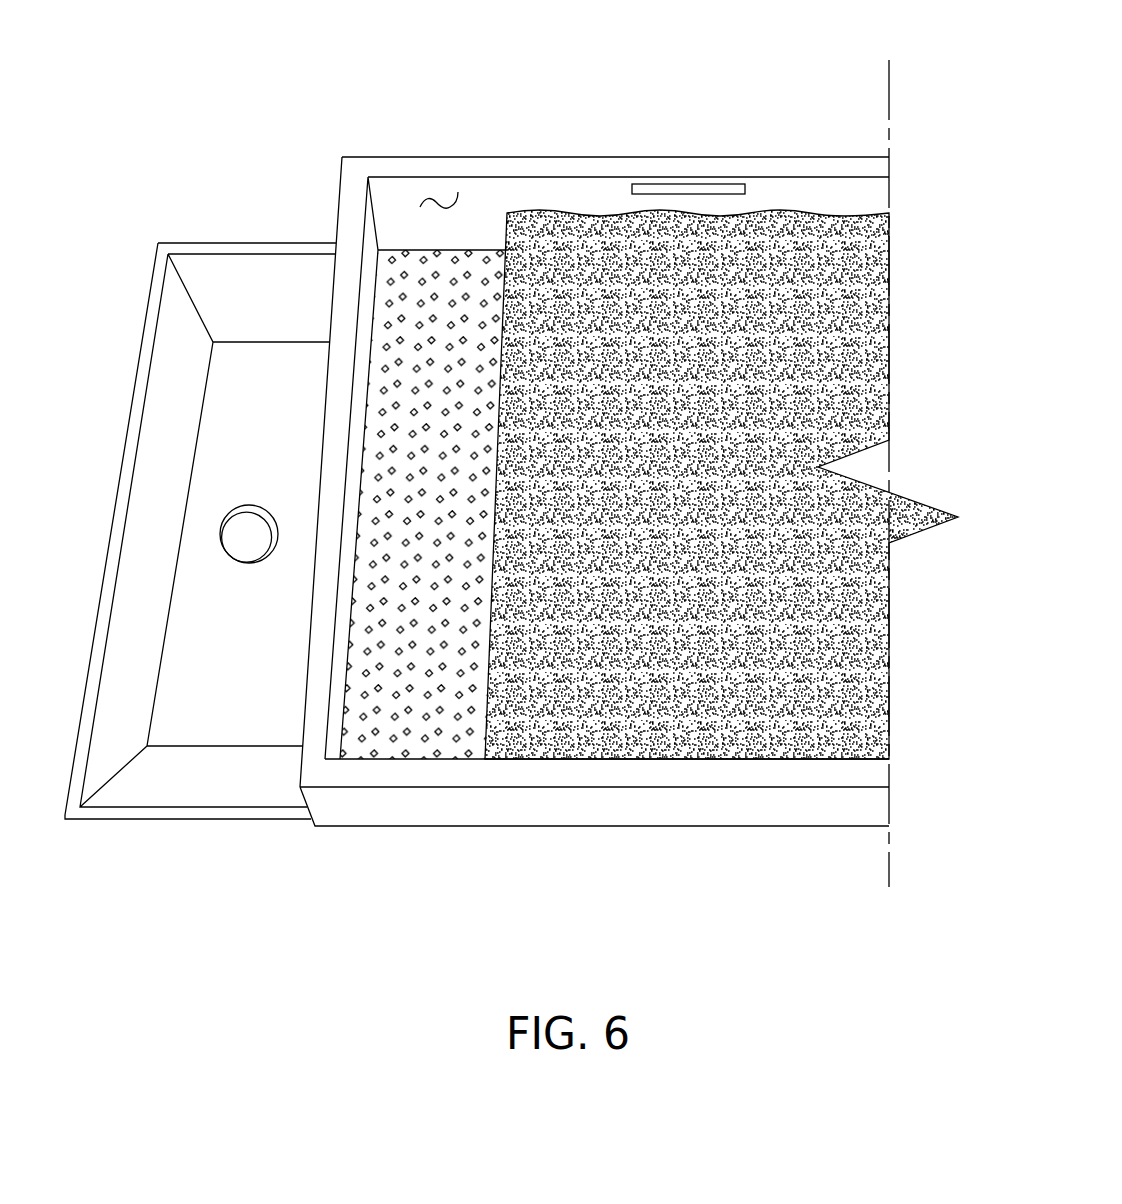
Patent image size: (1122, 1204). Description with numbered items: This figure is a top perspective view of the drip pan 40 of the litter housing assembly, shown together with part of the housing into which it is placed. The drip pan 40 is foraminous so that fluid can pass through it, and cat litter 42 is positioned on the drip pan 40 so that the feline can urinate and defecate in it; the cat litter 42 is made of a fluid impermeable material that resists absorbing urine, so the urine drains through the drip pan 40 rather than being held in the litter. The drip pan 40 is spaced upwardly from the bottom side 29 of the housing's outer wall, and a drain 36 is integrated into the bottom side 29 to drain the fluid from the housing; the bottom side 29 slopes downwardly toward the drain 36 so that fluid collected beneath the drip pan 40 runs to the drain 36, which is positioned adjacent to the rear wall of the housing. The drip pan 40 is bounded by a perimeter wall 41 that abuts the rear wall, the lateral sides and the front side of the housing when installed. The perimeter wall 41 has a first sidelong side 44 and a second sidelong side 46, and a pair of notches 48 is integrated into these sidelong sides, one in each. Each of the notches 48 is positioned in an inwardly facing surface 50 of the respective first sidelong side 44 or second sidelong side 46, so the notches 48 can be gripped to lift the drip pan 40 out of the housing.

The bottom side 29 is at (230, 708).
The drain 36 is at (250, 537).
The drip pan 40 is at (505, 157).
The perimeter wall 41 is at (757, 805).
The cat litter 42 is at (703, 298).
The first sidelong side 44 is at (614, 157).
The second sidelong side 46 is at (685, 812).
The notches 48 is at (720, 192).
The inwardly facing surface 50 is at (446, 203).